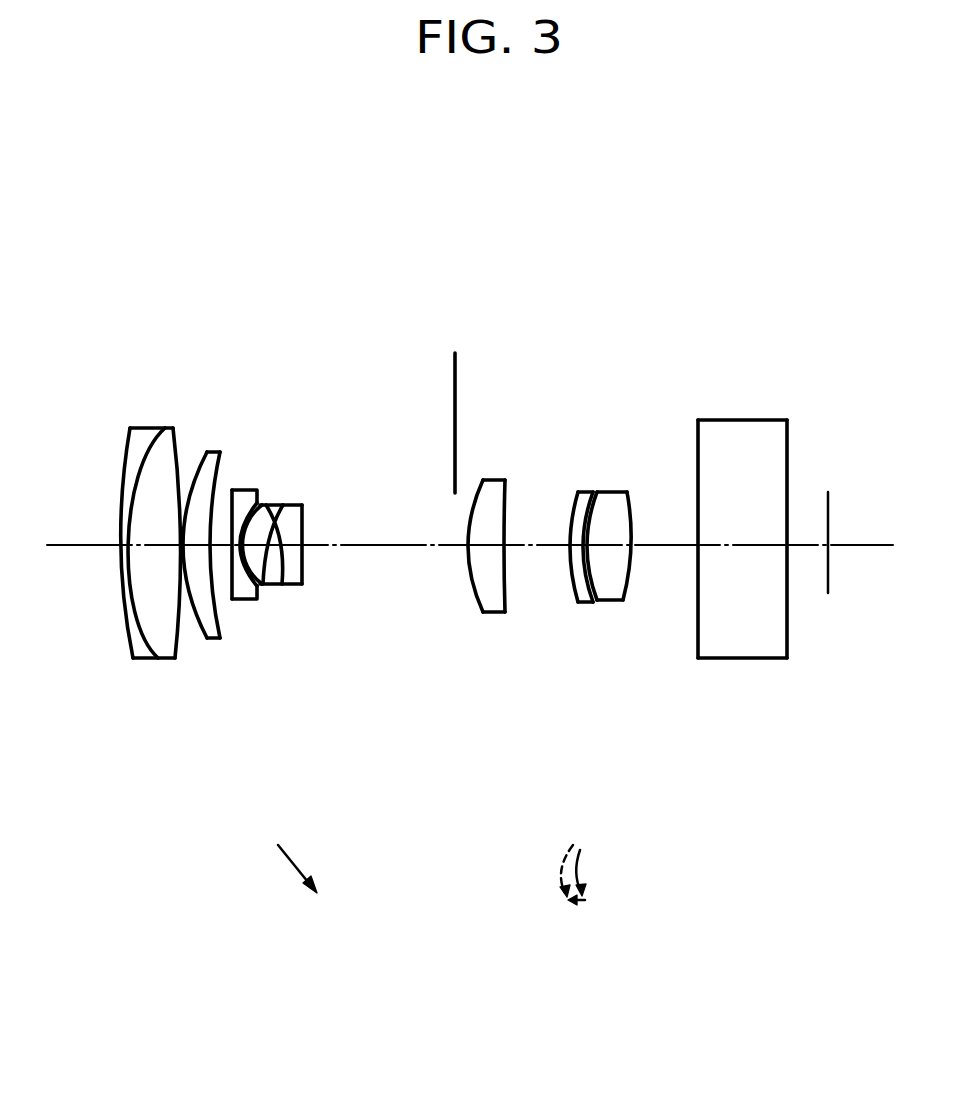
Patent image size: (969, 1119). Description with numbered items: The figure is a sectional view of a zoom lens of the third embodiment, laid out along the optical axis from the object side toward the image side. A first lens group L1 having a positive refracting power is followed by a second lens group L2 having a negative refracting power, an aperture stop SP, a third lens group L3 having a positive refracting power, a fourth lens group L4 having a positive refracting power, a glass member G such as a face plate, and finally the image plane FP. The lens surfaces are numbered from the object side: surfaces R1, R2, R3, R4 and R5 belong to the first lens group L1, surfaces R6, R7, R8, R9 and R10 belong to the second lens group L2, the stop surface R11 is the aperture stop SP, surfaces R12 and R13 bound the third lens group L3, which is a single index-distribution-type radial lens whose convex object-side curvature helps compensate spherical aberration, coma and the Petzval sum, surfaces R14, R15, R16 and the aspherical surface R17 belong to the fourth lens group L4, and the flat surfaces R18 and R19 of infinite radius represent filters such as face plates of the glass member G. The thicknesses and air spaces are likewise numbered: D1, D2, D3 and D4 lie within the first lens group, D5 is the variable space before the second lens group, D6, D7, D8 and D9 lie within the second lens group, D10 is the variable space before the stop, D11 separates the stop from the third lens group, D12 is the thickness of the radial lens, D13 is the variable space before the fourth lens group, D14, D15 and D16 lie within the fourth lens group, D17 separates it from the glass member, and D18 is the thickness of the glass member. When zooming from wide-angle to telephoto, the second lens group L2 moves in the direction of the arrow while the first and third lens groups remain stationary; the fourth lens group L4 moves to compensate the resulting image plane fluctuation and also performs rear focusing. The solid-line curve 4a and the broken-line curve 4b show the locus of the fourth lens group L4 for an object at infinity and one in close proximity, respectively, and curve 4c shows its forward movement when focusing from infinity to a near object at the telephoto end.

The first lens group L1 is at (245, 248).
The second lens group L2 is at (383, 248).
The third lens group L3 is at (538, 250).
The fourth lens group L4 is at (668, 250).
The glass member G is at (832, 250).
The aperture stop SP is at (443, 283).
The image plane FP is at (830, 507).
The first lens surface R1 is at (126, 448).
The second lens surface R2 is at (160, 445).
The third lens surface R3 is at (181, 428).
The fourth lens surface R4 is at (197, 455).
The fifth lens surface R5 is at (221, 452).
The sixth lens surface R6 is at (233, 490).
The seventh lens surface R7 is at (257, 492).
The eighth lens surface R8 is at (263, 506).
The ninth lens surface R9 is at (285, 506).
The tenth lens surface R10 is at (302, 508).
The stop surface R11 is at (453, 356).
The twelfth lens surface R12 is at (477, 480).
The thirteenth lens surface R13 is at (509, 482).
The fourteenth lens surface R14 is at (575, 502).
The fifteenth lens surface R15 is at (592, 496).
The sixteenth lens surface R16 is at (606, 494).
The seventeenth lens surface R17 is at (631, 497).
The filter surface R18 is at (700, 437).
The filter surface R19 is at (789, 435).
The first lens thickness D1 is at (125, 545).
The second lens thickness D2 is at (158, 545).
The third air space D3 is at (183, 545).
The fourth lens thickness D4 is at (203, 545).
The fifth air space D5 is at (227, 545).
The sixth lens thickness D6 is at (240, 545).
The seventh air space D7 is at (250, 545).
The eighth lens thickness D8 is at (268, 545).
The ninth lens thickness D9 is at (290, 545).
The tenth air space D10 is at (367, 546).
The eleventh air space D11 is at (460, 548).
The twelfth lens thickness D12 is at (488, 548).
The thirteenth air space D13 is at (533, 548).
The fourteenth lens thickness D14 is at (570, 548).
The fifteenth air space D15 is at (580, 548).
The sixteenth lens thickness D16 is at (613, 548).
The seventeenth air space D17 is at (667, 548).
The glass member thickness D18 is at (757, 545).
The solid-line curve 4a is at (580, 868).
The broken-line curve 4b is at (557, 868).
The curve 4c is at (578, 905).